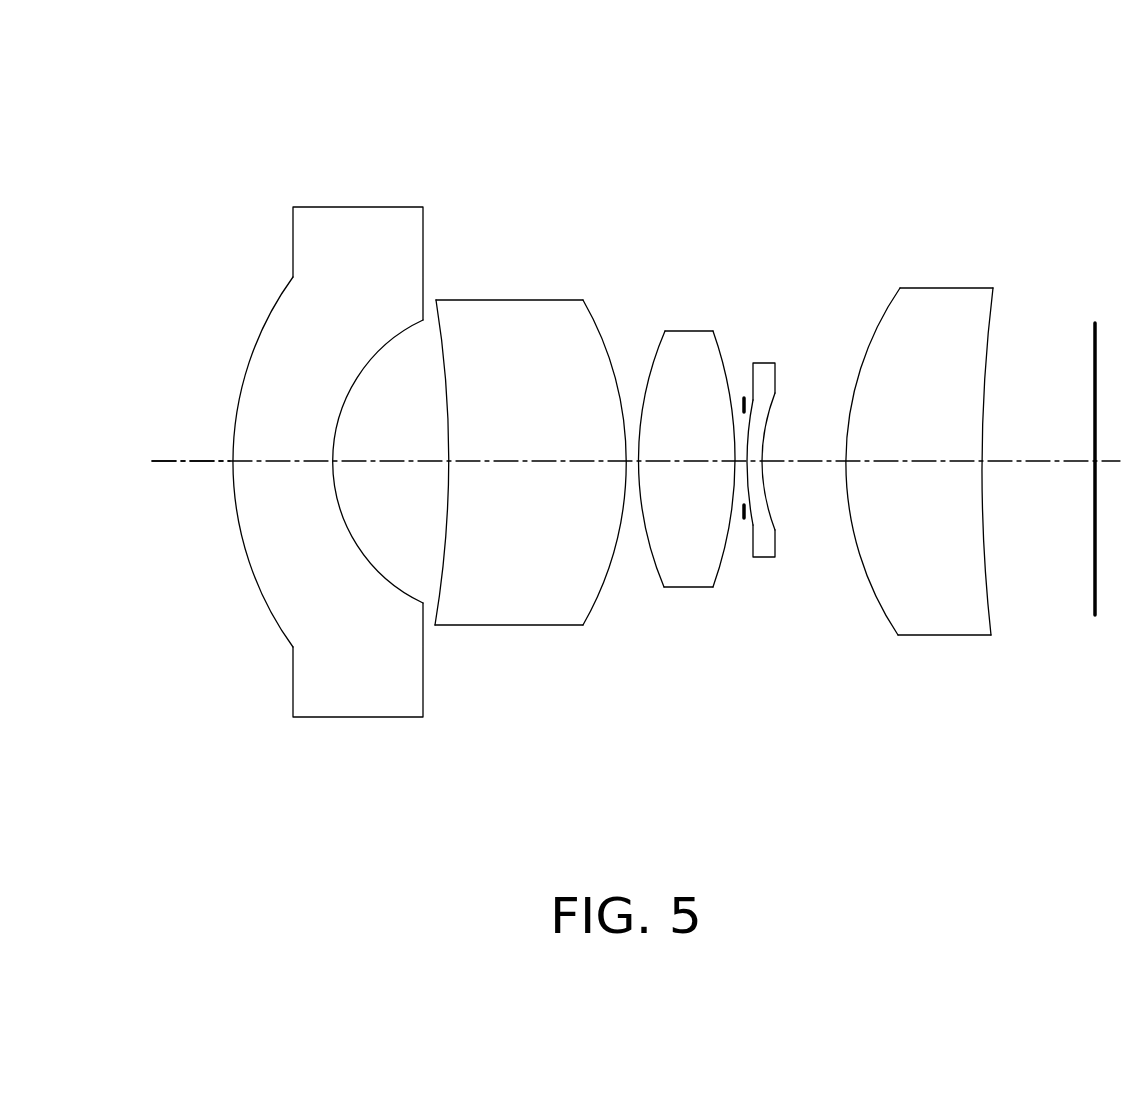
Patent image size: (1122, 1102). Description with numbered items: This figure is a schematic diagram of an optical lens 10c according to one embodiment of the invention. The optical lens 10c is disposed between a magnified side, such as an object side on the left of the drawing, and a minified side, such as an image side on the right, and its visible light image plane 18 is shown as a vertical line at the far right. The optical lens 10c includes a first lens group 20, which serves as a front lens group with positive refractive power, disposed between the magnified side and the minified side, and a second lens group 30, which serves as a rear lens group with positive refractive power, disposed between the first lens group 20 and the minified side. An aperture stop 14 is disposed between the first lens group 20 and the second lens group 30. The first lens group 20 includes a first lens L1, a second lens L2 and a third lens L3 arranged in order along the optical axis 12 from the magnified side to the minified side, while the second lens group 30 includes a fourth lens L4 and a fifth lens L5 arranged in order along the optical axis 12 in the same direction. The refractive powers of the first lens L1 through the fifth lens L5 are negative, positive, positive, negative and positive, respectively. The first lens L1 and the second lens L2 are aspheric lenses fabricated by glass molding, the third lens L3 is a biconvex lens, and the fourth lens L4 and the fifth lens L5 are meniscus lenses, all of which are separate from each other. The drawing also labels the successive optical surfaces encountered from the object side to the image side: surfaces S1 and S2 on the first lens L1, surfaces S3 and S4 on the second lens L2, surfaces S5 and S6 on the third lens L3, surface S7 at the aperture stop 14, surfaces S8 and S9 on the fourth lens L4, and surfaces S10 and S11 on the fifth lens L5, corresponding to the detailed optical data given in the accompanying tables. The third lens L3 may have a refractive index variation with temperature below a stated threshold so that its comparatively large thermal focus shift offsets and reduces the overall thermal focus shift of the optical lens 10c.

The optical lens 10c is at (181, 163).
The optical axis 12 is at (193, 462).
The aperture stop 14 is at (744, 398).
The visible light image plane 18 is at (1097, 572).
The first lens group 20 is at (707, 83).
The second lens group 30 is at (968, 167).
The first lens L1 is at (355, 207).
The second lens L2 is at (518, 300).
The third lens L3 is at (690, 331).
The fourth lens L4 is at (773, 363).
The fifth lens L5 is at (945, 288).
The object-side surface of first lens S1 is at (267, 607).
The image-side surface of first lens S2 is at (378, 577).
The object-side surface of second lens S3 is at (445, 552).
The image-side surface of second lens S4 is at (608, 573).
The object-side surface of third lens S5 is at (650, 560).
The image-side surface of third lens S6 is at (725, 560).
The aperture stop surface S7 is at (744, 518).
The object-side surface of fourth lens S8 is at (753, 525).
The image-side surface of fourth lens S9 is at (775, 530).
The object-side surface of fifth lens S10 is at (880, 604).
The image-side surface of fifth lens S11 is at (990, 595).